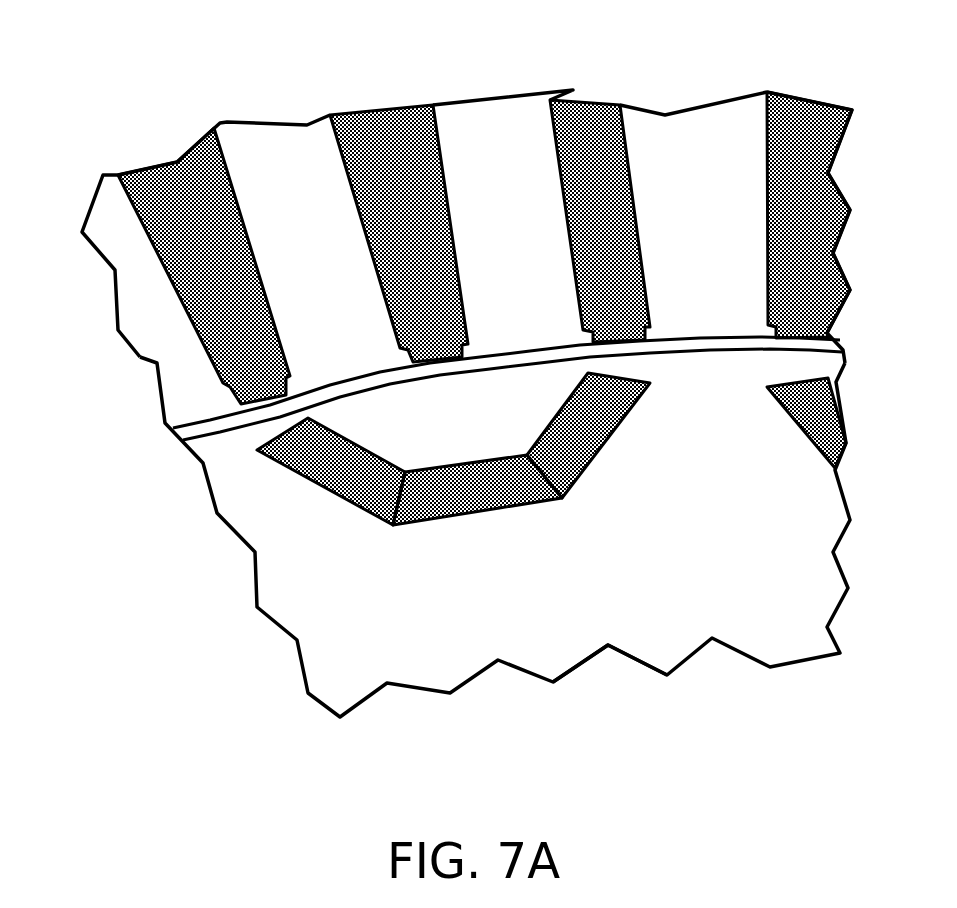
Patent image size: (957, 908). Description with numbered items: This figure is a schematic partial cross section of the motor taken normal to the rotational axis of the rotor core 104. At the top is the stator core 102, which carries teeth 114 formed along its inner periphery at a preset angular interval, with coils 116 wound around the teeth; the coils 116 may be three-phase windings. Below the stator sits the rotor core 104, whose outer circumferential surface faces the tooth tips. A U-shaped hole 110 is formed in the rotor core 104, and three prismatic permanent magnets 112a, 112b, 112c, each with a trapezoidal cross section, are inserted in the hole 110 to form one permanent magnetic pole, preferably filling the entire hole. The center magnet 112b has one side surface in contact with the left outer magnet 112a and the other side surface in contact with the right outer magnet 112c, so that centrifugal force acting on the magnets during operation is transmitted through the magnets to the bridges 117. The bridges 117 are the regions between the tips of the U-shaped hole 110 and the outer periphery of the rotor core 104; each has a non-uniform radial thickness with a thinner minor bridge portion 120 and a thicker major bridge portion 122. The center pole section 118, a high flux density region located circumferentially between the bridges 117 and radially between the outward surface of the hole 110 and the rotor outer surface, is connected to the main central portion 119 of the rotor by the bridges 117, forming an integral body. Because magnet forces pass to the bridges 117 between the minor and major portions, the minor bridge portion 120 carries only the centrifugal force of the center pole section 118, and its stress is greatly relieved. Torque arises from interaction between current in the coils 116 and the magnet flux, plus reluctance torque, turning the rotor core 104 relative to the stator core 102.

The stator core 102 is at (138, 356).
The rotor core 104 is at (453, 683).
The hole 110 is at (646, 419).
The left outer magnet 112a is at (337, 462).
The center magnet 112b is at (472, 493).
The right outer magnet 112c is at (592, 430).
The teeth 114 is at (493, 143).
The coils 116 is at (615, 117).
The bridges 117 is at (295, 417).
The center pole section 118 is at (397, 448).
The main central portion 119 is at (612, 623).
The minor bridge portion 120 is at (303, 400).
The major bridge portion 122 is at (233, 425).